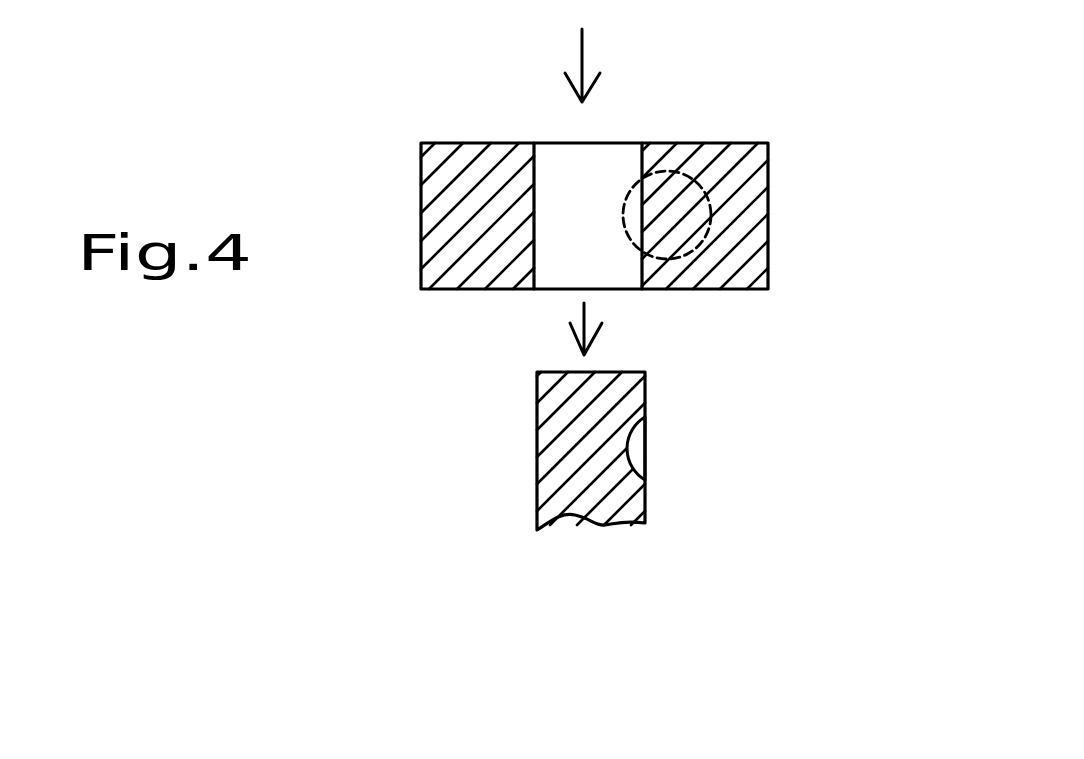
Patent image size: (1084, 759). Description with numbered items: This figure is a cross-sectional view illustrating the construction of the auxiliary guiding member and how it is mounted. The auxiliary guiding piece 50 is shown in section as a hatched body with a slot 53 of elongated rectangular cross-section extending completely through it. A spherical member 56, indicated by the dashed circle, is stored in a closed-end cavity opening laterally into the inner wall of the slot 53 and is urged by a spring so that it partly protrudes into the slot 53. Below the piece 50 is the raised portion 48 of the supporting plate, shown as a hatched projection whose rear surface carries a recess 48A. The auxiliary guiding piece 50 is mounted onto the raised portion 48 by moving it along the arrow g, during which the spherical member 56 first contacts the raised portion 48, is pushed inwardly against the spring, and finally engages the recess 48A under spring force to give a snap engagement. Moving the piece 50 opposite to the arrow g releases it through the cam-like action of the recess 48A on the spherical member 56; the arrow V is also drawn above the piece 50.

The auxiliary guiding piece 50 is at (748, 222).
The slot 53 is at (535, 177).
The spherical member 56 is at (635, 207).
The raised portion 48 is at (657, 451).
The recess 48A is at (638, 448).
The arrow g is at (584, 310).
The direction of movement V is at (606, 59).